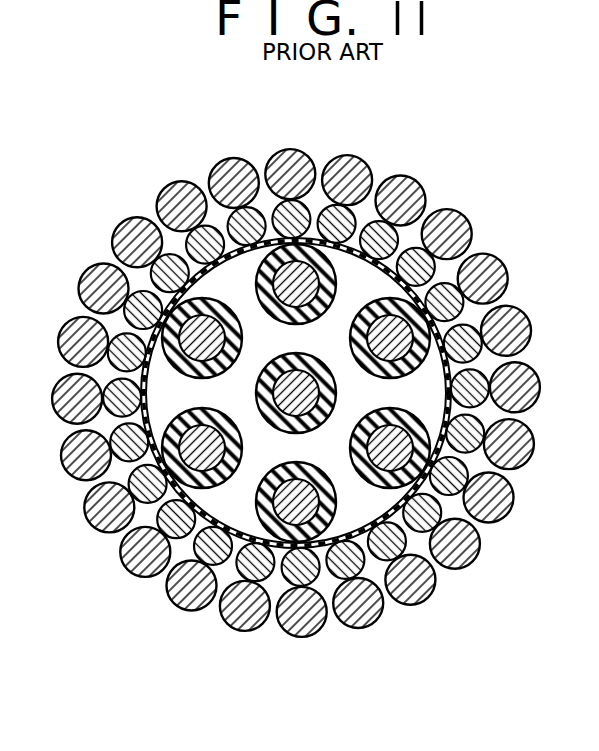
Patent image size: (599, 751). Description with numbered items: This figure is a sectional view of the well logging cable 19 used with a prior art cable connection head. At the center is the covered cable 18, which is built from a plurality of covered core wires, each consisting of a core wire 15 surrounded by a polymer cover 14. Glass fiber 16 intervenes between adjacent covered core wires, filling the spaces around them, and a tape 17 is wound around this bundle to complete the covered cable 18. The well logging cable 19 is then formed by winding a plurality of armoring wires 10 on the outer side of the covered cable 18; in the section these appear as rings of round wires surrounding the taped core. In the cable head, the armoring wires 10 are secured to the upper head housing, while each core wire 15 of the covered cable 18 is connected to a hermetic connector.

The armoring wire 10 is at (495, 263).
The polymer cover 14 is at (202, 442).
The core wire 15 is at (368, 452).
The glass fiber 16 is at (215, 510).
The tape 17 is at (407, 540).
The covered cable 18 is at (133, 380).
The well logging cable 19 is at (91, 172).